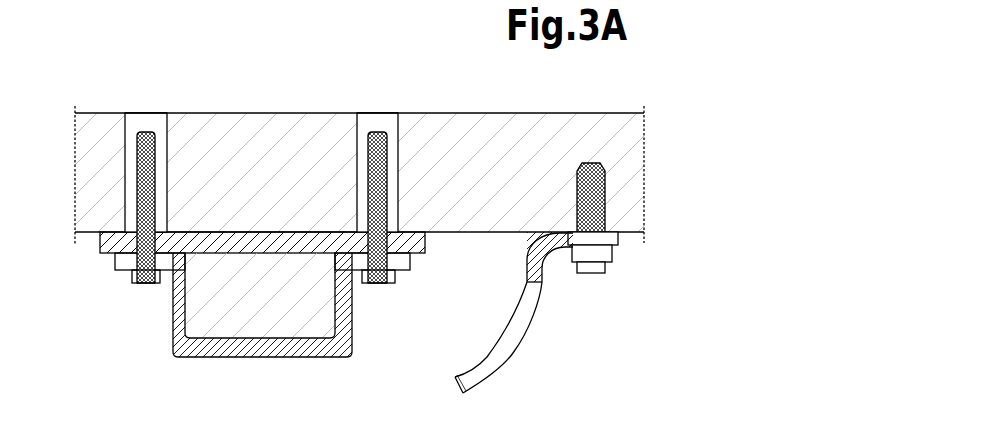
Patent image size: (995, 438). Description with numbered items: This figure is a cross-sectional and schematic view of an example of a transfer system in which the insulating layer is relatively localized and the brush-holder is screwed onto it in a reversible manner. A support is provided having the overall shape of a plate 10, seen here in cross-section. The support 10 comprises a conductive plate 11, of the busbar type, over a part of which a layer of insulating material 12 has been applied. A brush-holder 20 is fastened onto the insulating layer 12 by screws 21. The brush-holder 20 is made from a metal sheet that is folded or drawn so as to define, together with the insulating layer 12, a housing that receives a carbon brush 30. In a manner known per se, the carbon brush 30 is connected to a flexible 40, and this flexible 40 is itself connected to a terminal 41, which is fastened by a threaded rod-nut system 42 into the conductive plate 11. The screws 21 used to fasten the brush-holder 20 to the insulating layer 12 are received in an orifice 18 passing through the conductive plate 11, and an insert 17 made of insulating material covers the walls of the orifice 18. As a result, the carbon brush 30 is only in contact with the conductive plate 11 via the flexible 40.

The plate 10 is at (383, 153).
The conductive plate 11 is at (290, 132).
The layer of insulating material 12 is at (114, 242).
The insert 17 is at (128, 132).
The orifice 18 is at (377, 113).
The brush-holder 20 is at (183, 310).
The screws 21 is at (140, 275).
The carbon brush 30 is at (322, 310).
The flexible 40 is at (530, 303).
The terminal 41 is at (527, 262).
The threaded rod-nut system 42 is at (606, 198).